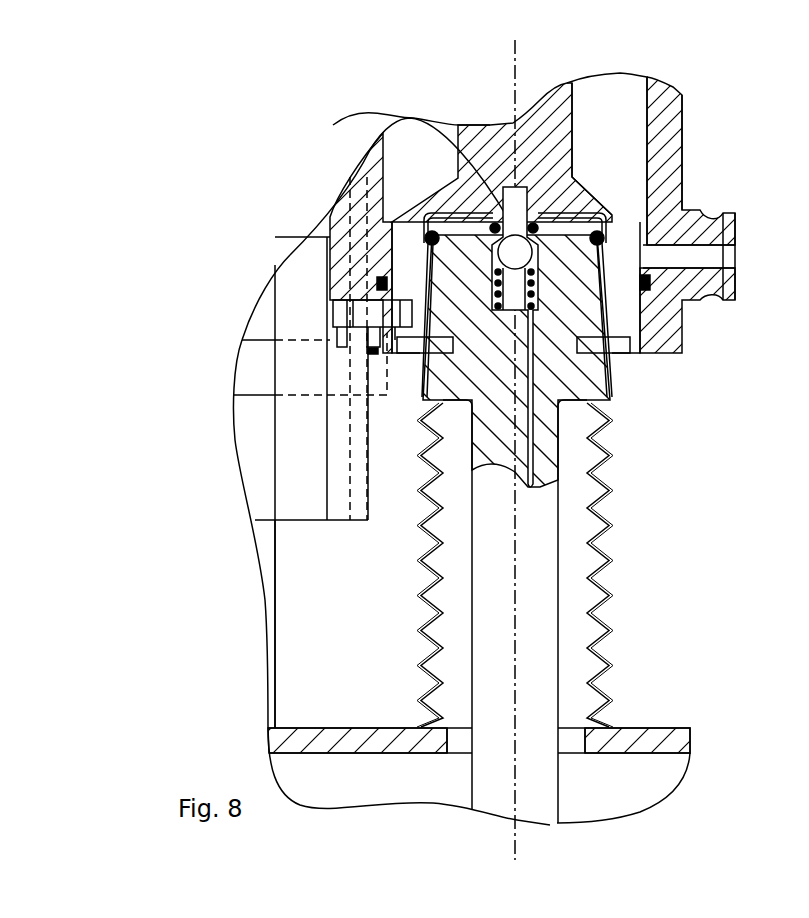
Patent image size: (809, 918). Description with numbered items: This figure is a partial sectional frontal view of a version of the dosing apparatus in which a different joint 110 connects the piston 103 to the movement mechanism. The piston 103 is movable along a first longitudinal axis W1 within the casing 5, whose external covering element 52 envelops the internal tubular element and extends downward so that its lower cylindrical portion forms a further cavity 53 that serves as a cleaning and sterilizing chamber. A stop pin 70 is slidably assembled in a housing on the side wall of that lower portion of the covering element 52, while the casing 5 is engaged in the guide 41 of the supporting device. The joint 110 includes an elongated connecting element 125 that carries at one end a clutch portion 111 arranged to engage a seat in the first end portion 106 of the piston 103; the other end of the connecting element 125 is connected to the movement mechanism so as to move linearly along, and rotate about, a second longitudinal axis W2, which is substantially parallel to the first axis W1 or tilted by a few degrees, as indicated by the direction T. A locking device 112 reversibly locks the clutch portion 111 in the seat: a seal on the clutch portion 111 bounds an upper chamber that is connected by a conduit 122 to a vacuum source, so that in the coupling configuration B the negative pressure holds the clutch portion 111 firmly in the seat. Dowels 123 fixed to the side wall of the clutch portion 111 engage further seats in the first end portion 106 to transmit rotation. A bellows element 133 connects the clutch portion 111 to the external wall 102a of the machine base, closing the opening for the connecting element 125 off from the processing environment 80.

The piston 103 is at (588, 106).
The further cavity 53 is at (628, 158).
The casing 5 is at (702, 134).
The locking device 112 is at (612, 215).
The first end portion 106 is at (381, 125).
The external covering element 52 is at (373, 203).
The guide 41 is at (288, 305).
The stop pin 70 is at (362, 318).
The clutch portion 111 is at (562, 373).
The dowels 123 is at (427, 390).
The conduit 122 is at (535, 487).
The connecting element 125 is at (535, 592).
The joint 110 is at (378, 568).
The bellows element 133 is at (432, 637).
The external wall 102a is at (337, 727).
The processing environment 80 is at (668, 712).
The coupling configuration B is at (246, 142).
The first longitudinal axis W1 is at (515, 58).
The second longitudinal axis W2 is at (517, 680).
The axis direction T is at (661, 405).